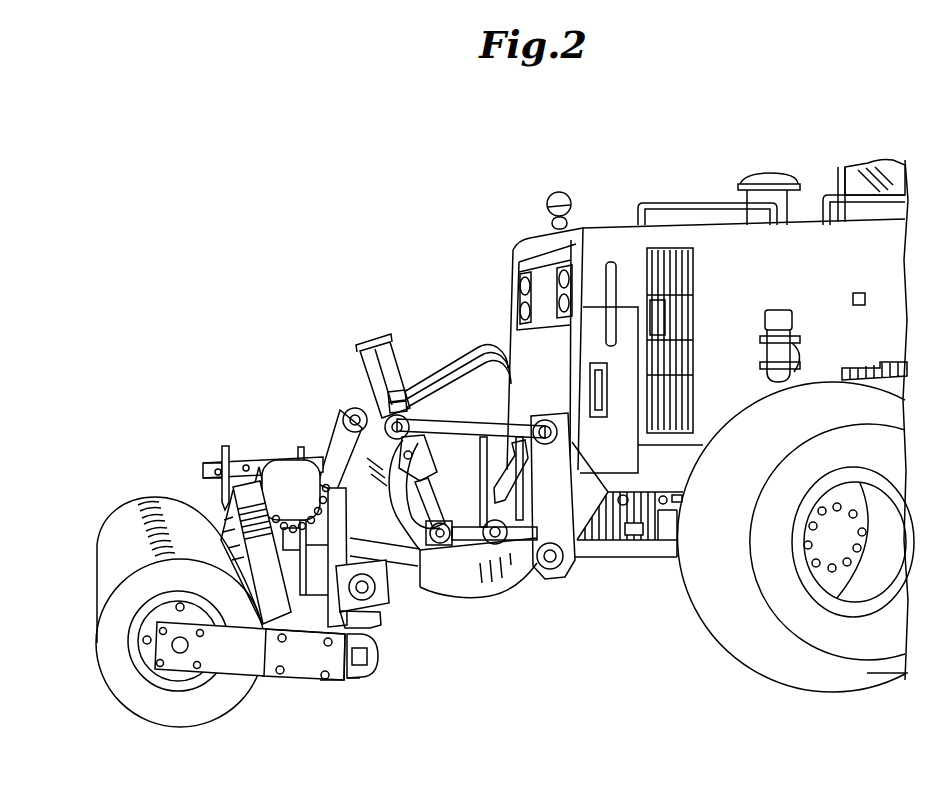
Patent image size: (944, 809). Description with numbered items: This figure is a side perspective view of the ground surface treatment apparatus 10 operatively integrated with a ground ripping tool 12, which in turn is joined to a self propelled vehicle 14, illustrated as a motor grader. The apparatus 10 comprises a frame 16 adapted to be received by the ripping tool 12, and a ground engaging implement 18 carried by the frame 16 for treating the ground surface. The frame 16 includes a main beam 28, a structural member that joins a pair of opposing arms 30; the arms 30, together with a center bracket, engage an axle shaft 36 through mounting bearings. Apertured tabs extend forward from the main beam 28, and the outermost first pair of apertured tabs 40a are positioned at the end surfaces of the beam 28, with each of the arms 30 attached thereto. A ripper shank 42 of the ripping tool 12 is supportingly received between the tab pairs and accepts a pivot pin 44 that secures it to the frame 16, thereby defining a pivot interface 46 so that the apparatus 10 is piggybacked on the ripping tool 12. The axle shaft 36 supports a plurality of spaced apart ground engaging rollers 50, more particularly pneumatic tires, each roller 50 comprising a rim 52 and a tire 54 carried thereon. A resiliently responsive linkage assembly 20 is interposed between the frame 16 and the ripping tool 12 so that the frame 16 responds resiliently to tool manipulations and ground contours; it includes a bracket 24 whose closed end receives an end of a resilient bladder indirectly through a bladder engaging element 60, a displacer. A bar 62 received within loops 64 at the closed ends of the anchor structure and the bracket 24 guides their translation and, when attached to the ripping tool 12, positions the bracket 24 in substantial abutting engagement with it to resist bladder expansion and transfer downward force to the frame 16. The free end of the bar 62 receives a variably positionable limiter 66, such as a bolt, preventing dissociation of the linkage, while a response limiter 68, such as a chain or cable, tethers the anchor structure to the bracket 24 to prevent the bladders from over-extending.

The ground surface treatment apparatus 10 is at (127, 492).
The ground ripping tool 12 is at (551, 597).
The self propelled vehicle 14 is at (497, 258).
The frame 16 is at (293, 690).
The ground engaging implement 18 is at (88, 575).
The resiliently responsive linkage assembly 20 is at (203, 493).
The bracket 24 is at (412, 578).
The main beam 28 is at (270, 628).
The opposing arms 30 is at (244, 663).
The axle shaft 36 is at (178, 654).
The first pair of apertured tabs 40a is at (352, 681).
The ripper shank 42 is at (380, 633).
The pivot pin 44 is at (372, 662).
The pivot interface 46 is at (338, 690).
The ground engaging rollers 50 is at (97, 648).
The rim 52 is at (134, 658).
The tire 54 is at (178, 627).
The bladder engaging element 60 is at (286, 460).
The bar 62 is at (246, 465).
The loops 64 is at (218, 445).
The limiter 66 is at (220, 447).
The response limiter 68 is at (305, 455).